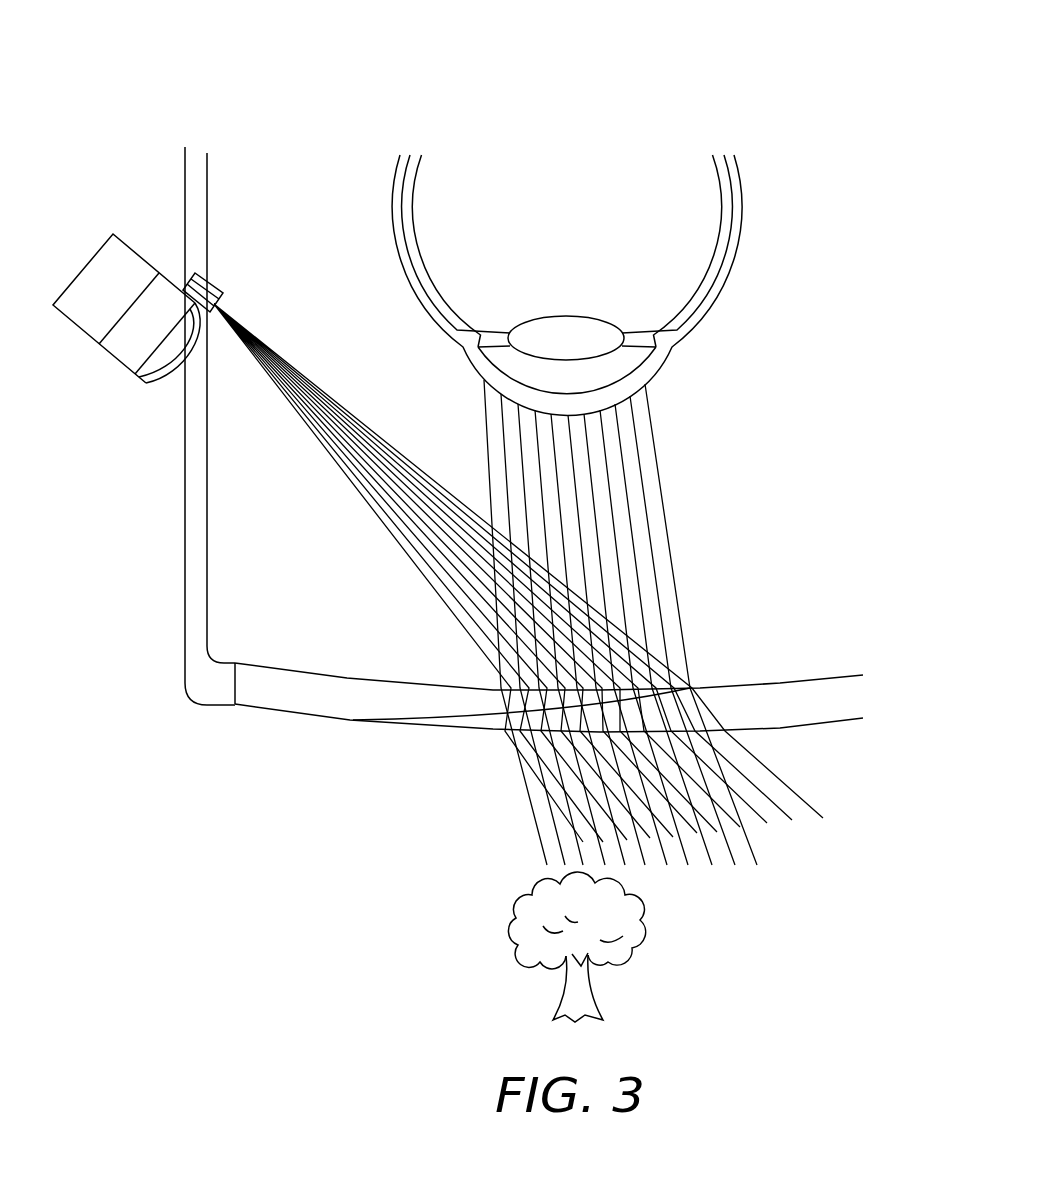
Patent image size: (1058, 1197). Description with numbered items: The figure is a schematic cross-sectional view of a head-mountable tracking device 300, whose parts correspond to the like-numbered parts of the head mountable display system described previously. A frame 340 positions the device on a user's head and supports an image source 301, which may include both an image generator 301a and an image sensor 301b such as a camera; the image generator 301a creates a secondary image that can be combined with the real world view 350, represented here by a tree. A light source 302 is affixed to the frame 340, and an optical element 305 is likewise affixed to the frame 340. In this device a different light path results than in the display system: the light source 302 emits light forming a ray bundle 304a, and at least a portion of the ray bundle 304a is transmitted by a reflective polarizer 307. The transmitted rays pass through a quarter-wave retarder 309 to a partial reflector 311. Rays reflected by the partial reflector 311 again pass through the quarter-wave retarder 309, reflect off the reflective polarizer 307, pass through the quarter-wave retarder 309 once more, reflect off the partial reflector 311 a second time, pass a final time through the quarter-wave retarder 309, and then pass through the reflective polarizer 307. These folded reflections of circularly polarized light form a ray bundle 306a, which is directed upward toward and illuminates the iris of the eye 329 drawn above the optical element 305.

The head-mountable tracking device 300 is at (175, 76).
The eye 329 is at (363, 170).
The frame 340 is at (188, 174).
The image source 301 is at (80, 258).
The image generator 301a is at (72, 302).
The image sensor 301b is at (121, 352).
The light source 302 is at (216, 283).
The ray bundle 304a is at (410, 512).
The ray bundle 306a is at (612, 487).
The optical element 305 is at (282, 755).
The reflective polarizer 307 is at (825, 679).
The quarter-wave retarder 309 is at (838, 678).
The partial reflector 311 is at (475, 720).
The real world view 350 is at (630, 987).